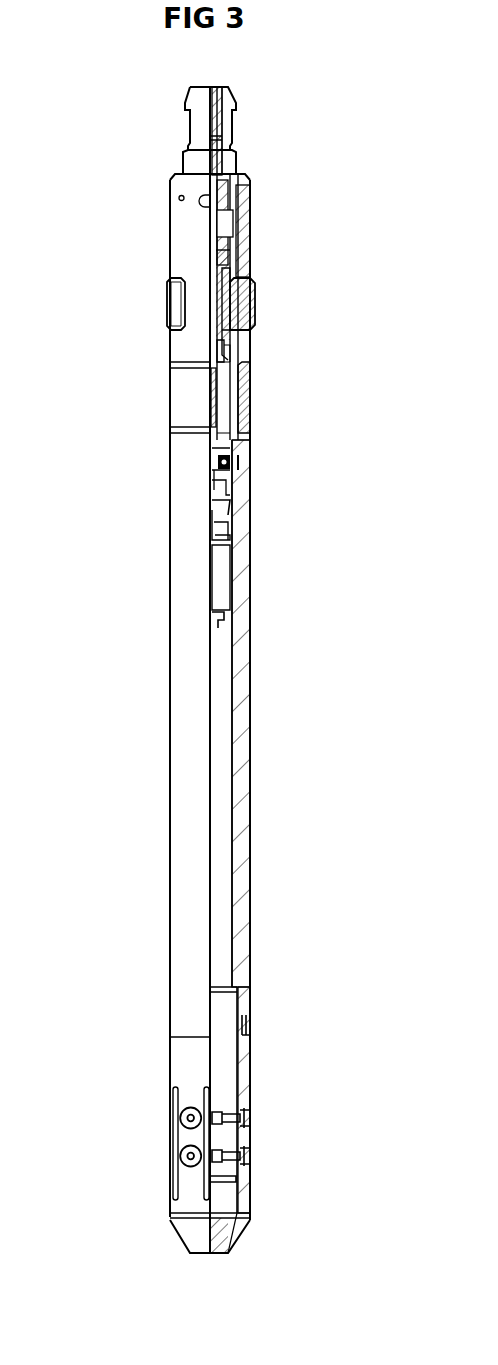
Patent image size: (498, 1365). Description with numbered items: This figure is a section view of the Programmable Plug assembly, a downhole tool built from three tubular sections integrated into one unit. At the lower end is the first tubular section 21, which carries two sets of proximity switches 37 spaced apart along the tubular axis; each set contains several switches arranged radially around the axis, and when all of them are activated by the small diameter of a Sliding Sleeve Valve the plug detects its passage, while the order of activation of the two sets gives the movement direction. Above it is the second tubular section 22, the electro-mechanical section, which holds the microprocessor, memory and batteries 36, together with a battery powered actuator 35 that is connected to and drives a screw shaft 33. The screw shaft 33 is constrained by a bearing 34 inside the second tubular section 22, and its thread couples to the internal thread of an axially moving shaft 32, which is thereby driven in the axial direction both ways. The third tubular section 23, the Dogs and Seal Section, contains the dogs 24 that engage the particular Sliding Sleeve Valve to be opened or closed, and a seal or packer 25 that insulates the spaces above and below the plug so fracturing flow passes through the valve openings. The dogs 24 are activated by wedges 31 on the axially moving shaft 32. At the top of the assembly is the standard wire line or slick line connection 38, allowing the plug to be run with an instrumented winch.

The first tubular section 21 is at (190, 1068).
The second tubular section 22 is at (192, 813).
The third tubular section 23 is at (183, 243).
The dogs 24 is at (178, 300).
The seal (packer) 25 is at (195, 405).
The wedges on the axial moving shaft 31 is at (253, 280).
The axially moving shaft with internal thread 32 is at (225, 360).
The screw shaft 33 is at (222, 433).
The bearing 34 is at (238, 460).
The battery powered actuator 35 is at (217, 575).
The batteries 36 is at (218, 769).
The proximity switches 37 is at (250, 1108).
The wire line/slick line connection 38 is at (197, 130).